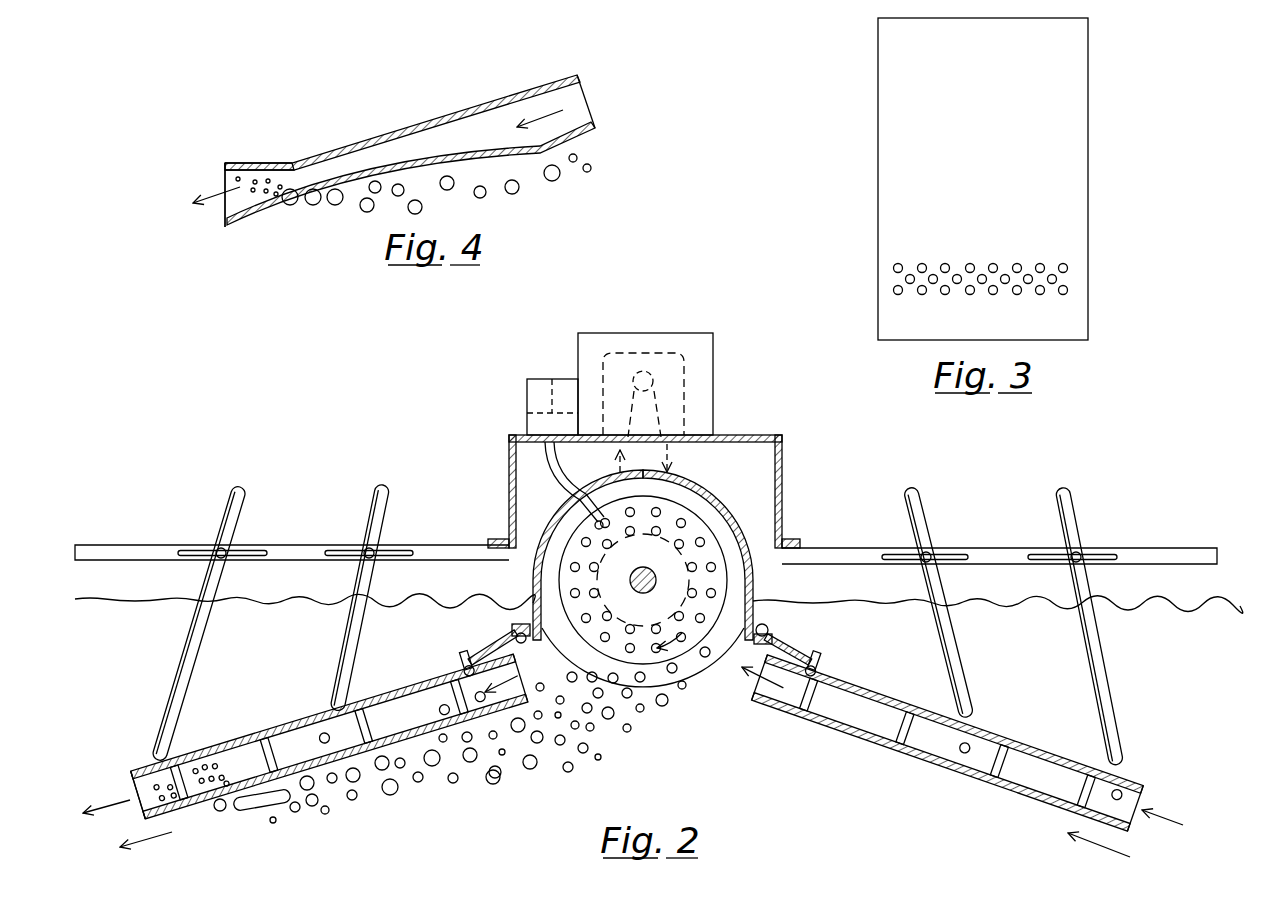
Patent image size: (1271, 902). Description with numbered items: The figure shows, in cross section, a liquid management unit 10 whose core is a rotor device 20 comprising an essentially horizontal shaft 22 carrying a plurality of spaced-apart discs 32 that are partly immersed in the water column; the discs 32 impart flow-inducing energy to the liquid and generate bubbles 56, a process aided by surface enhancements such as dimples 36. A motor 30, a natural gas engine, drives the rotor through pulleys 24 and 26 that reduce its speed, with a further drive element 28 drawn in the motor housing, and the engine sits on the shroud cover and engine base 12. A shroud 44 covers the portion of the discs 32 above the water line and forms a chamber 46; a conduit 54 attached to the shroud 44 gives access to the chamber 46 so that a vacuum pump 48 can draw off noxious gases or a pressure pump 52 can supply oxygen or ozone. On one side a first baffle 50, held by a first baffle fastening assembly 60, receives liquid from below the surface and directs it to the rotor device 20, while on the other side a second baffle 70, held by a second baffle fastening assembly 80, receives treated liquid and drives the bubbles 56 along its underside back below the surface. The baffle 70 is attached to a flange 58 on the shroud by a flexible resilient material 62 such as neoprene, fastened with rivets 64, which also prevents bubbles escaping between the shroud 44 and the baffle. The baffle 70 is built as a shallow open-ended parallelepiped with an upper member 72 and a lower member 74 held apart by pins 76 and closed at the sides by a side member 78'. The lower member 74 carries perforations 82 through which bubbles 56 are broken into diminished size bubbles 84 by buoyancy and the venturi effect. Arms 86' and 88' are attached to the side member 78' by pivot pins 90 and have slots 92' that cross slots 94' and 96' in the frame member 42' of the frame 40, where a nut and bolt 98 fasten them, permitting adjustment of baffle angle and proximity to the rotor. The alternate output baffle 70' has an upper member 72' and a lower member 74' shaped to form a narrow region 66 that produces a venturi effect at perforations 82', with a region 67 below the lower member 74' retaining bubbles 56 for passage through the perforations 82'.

In FIG. 2, the liquid management unit 10 is at (610, 525).
In FIG. 2, the shroud cover and engine base 12 is at (782, 462).
In FIG. 2, the rotor device 20 is at (704, 695).
In FIG. 2, the shaft 22 is at (636, 571).
In FIG. 2, the pulley 24 is at (643, 580).
In FIG. 2, the pulley 26 is at (650, 372).
In FIG. 2, the feed passage 28 is at (662, 413).
In FIG. 2, the motor 30 is at (627, 355).
In FIG. 2, the discs 32 is at (700, 530).
In FIG. 2, the dimples 36 is at (592, 521).
In FIG. 2, the frame 40 is at (315, 520).
In FIG. 2, the frame member 42' is at (999, 535).
In FIG. 2, the shroud 44 is at (753, 583).
In FIG. 2, the chamber 46 is at (547, 583).
In FIG. 2, the vacuum pump 48 is at (560, 380).
In FIG. 2, the first baffle 50 is at (992, 712).
In FIG. 2, the pressure pump 52 is at (527, 395).
In FIG. 2, the conduit 54 is at (553, 466).
In FIG. 4, the bubbles 56 is at (556, 182).
In FIG. 2, the bubbles 56 is at (395, 792).
In FIG. 2, the flange 58 is at (534, 651).
In FIG. 2, the first baffle fastening assembly 60 is at (830, 645).
In FIG. 2, the resilient material 62 is at (462, 664).
In FIG. 2, the rivets 64 is at (513, 627).
In FIG. 4, the narrow region 66 is at (318, 167).
In FIG. 4, the region 67 is at (330, 244).
In FIG. 2, the second baffle 70 is at (305, 750).
In FIG. 4, the alternate output baffle 70' is at (391, 146).
In FIG. 2, the upper member 72 is at (637, 723).
In FIG. 4, the upper member 72' is at (402, 122).
In FIG. 3, the lower member 74 is at (959, 179).
In FIG. 2, the lower member 74 is at (636, 782).
In FIG. 4, the lower member 74' is at (411, 173).
In FIG. 2, the pins 76 is at (270, 752).
In FIG. 2, the side member 78' is at (725, 735).
In FIG. 2, the second baffle fastening assembly 80 is at (635, 642).
In FIG. 3, the perforations 82 is at (981, 263).
In FIG. 2, the perforations 82 is at (610, 805).
In FIG. 4, the perforations 82' is at (273, 209).
In FIG. 4, the diminished size bubbles 84 is at (240, 180).
In FIG. 2, the diminished size bubbles 84 is at (215, 777).
In FIG. 2, the arm 86' is at (642, 622).
In FIG. 2, the arm 88' is at (655, 596).
In FIG. 2, the pivot pins 90 is at (152, 788).
In FIG. 2, the slot 92' is at (648, 620).
In FIG. 2, the slot 94' is at (233, 529).
In FIG. 2, the slot 96' is at (385, 537).
In FIG. 2, the nut and bolt 98 is at (208, 558).